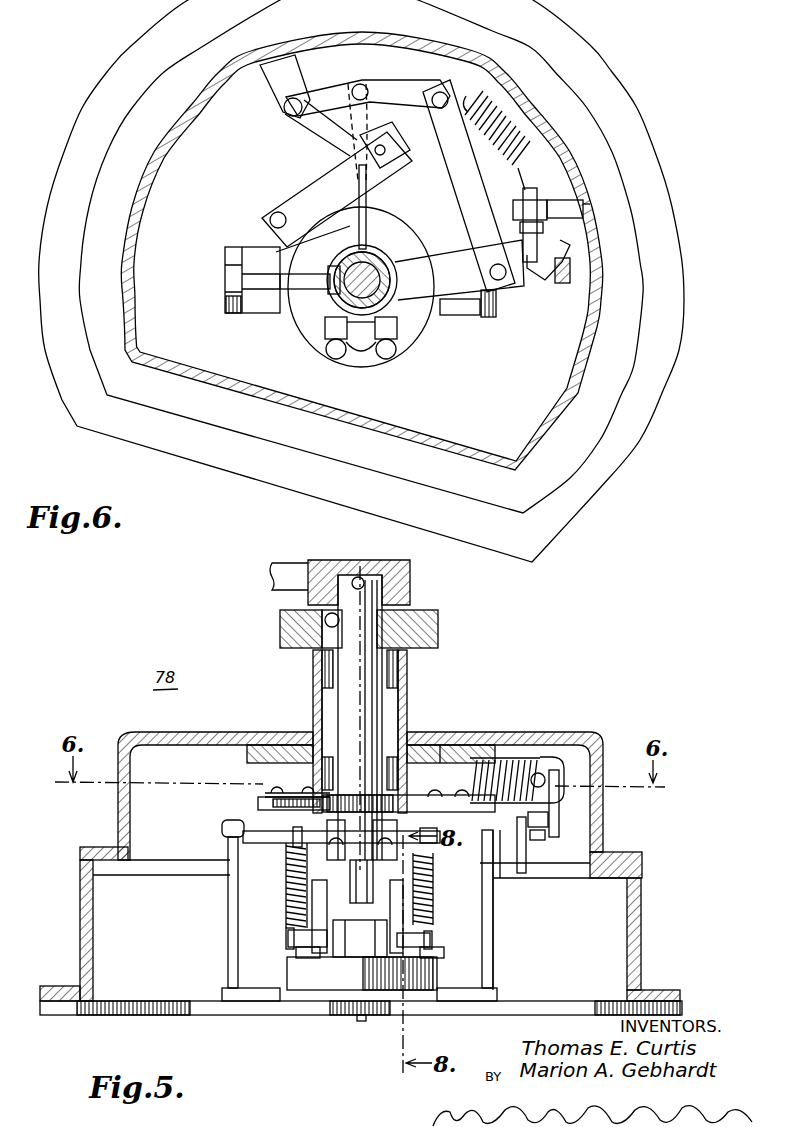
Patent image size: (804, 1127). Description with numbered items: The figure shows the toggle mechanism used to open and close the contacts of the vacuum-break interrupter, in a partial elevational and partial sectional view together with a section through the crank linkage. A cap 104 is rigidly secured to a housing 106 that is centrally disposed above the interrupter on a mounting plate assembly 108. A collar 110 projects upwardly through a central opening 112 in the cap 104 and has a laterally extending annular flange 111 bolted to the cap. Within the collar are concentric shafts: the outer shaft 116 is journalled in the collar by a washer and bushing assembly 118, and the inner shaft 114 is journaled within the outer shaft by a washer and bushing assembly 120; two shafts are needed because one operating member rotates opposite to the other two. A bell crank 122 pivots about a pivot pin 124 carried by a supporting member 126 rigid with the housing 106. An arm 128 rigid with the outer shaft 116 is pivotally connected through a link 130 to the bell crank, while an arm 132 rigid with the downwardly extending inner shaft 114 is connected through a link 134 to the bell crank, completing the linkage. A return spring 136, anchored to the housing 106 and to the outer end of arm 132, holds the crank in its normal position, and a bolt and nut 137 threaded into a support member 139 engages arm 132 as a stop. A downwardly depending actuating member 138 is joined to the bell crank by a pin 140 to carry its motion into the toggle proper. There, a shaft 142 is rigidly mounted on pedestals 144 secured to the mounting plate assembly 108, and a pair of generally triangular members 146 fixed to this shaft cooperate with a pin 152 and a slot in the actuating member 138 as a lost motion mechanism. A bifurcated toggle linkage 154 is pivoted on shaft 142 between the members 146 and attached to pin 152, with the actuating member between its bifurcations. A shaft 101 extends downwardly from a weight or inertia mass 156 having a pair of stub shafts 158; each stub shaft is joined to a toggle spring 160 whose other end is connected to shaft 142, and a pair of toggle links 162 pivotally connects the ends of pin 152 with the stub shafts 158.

In FIG. 5, the shaft 101 is at (362, 1022).
In FIG. 6, the cap 104 is at (558, 408).
In FIG. 5, the cap 104 is at (590, 735).
In FIG. 6, the housing 106 is at (628, 432).
In FIG. 5, the housing 106 is at (640, 914).
In FIG. 6, the mounting plate assembly 108 is at (424, 387).
In FIG. 5, the mounting plate assembly 108 is at (148, 1014).
In FIG. 5, the collar 110 is at (410, 690).
In FIG. 5, the annular flange 111 is at (468, 742).
In FIG. 5, the central opening 112 is at (430, 740).
In FIG. 6, the inner shaft 114 is at (372, 280).
In FIG. 5, the inner shaft 114 is at (358, 575).
In FIG. 6, the outer shaft 116 is at (350, 256).
In FIG. 5, the outer shaft 116 is at (337, 700).
In FIG. 5, the washer and bushing assembly 118 is at (318, 662).
In FIG. 5, the washer and bushing assembly 120 is at (424, 620).
In FIG. 6, the bell crank 122 is at (393, 88).
In FIG. 6, the pivot pin 124 is at (284, 114).
In FIG. 6, the supporting member 126 is at (268, 70).
In FIG. 5, the supporting member 126 is at (270, 846).
In FIG. 6, the laterally extending arm 128 is at (270, 235).
In FIG. 5, the laterally extending arm 128 is at (265, 790).
In FIG. 6, the link 130 is at (303, 188).
In FIG. 5, the link 130 is at (258, 802).
In FIG. 6, the laterally extending arm 132 is at (420, 292).
In FIG. 5, the laterally extending arm 132 is at (413, 796).
In FIG. 6, the link 134 is at (475, 210).
In FIG. 5, the link 134 is at (455, 797).
In FIG. 6, the return spring 136 is at (515, 122).
In FIG. 5, the return spring 136 is at (510, 760).
In FIG. 6, the bolt and nut 137 is at (532, 192).
In FIG. 5, the bolt and nut 137 is at (526, 824).
In FIG. 6, the actuating member 138 is at (367, 192).
In FIG. 5, the actuating member 138 is at (364, 905).
In FIG. 6, the support member 139 is at (580, 208).
In FIG. 6, the pin 140 is at (352, 88).
In FIG. 6, the shaft 142 is at (228, 278).
In FIG. 5, the shaft 142 is at (240, 828).
In FIG. 6, the pedestals 144 is at (235, 305).
In FIG. 5, the pedestals 144 is at (230, 945).
In FIG. 6, the triangularly shaped members 146 is at (347, 337).
In FIG. 5, the triangularly shaped members 146 is at (433, 886).
In FIG. 5, the pin 152 is at (284, 889).
In FIG. 5, the bifurcated toggle linkage 154 is at (357, 820).
In FIG. 6, the weight or inertia mass 156 is at (312, 318).
In FIG. 5, the weight or inertia mass 156 is at (288, 970).
In FIG. 5, the stub shafts 158 is at (310, 958).
In FIG. 5, the toggle spring 160 is at (293, 912).
In FIG. 5, the toggle links 162 is at (290, 912).